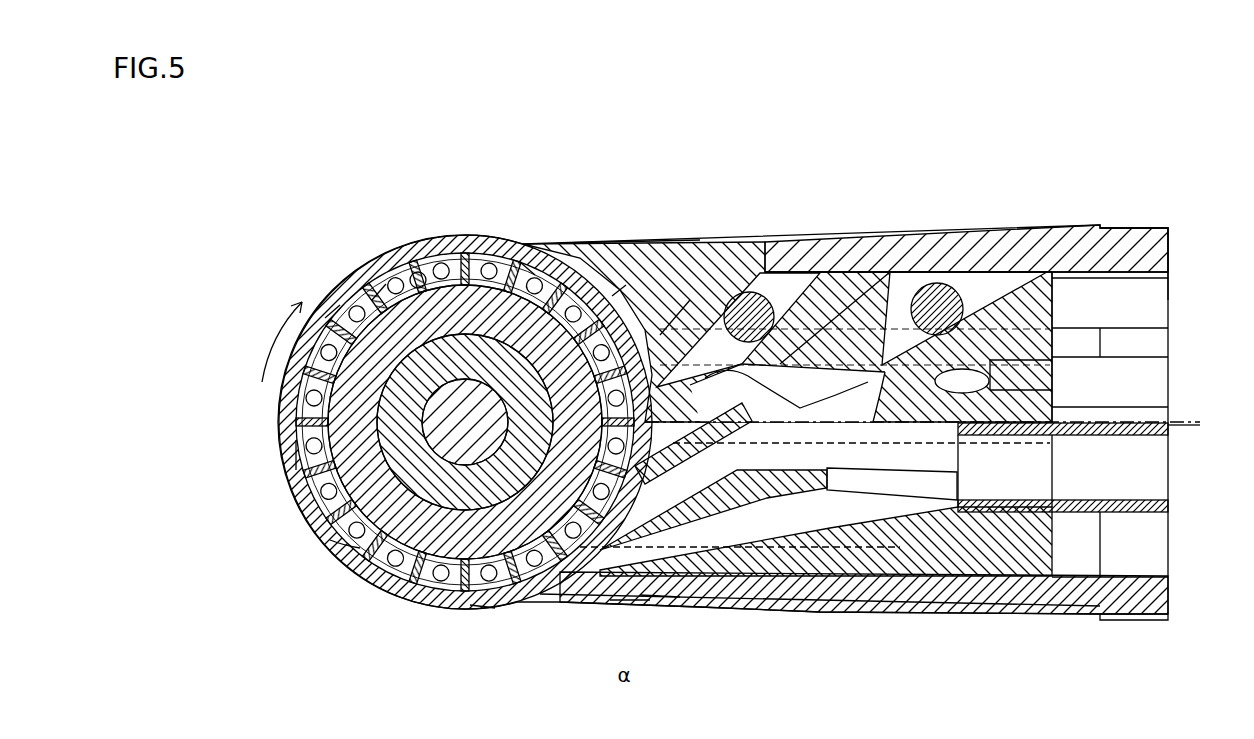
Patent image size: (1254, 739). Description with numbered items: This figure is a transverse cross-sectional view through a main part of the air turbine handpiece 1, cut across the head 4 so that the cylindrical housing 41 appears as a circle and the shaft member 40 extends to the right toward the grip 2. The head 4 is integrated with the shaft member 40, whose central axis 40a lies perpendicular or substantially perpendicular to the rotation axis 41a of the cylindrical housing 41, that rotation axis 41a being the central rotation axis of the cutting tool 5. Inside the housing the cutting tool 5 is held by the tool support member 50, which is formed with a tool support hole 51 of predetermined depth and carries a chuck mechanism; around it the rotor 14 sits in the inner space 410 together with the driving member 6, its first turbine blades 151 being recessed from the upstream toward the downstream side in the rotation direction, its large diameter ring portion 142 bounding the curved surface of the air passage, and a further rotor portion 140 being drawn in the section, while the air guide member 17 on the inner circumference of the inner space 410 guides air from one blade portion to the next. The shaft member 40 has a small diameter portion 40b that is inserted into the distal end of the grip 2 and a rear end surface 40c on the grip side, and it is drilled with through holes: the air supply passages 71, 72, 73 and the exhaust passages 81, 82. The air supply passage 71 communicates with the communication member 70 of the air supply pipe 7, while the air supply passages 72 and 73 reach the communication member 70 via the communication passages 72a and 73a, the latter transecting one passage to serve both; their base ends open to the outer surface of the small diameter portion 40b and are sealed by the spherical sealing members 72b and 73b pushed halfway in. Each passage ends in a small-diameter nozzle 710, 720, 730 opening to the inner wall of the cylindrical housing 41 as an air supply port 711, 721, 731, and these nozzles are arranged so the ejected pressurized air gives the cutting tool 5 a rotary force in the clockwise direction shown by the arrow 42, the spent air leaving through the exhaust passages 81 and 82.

The air turbine handpiece 1 is at (1066, 210).
The grip 2 is at (1135, 228).
The head 4 is at (523, 610).
The cutting tool 5 is at (440, 592).
The driving member 6 is at (590, 250).
The air supply pipe 7 is at (1130, 512).
The rotor 14 is at (357, 575).
The air guide member 17 is at (328, 318).
The shaft member 40 is at (836, 614).
The central axis 40a is at (1182, 428).
The small diameter portion 40b is at (962, 616).
The rear end surface 40c is at (1066, 620).
The cylindrical housing 41 is at (320, 500).
The rotation axis 41a is at (416, 272).
The arrow (rotation direction) 42 is at (265, 385).
The tool support member 50 is at (393, 588).
The tool support hole 51 is at (479, 340).
The communication member 70 is at (905, 614).
The air supply passage 71 is at (706, 612).
The air supply passage 72 is at (862, 345).
The communication passage 72a is at (890, 255).
The spherical sealing member 72b is at (948, 288).
The air supply passage 73 is at (700, 262).
The communication passage 73a is at (742, 293).
The spherical sealing member 73b is at (745, 384).
The exhaust passage 81 is at (791, 613).
The exhaust passage 82 is at (850, 255).
The groove 140 is at (525, 265).
The large diameter ring portion 142 is at (372, 300).
The first turbine blade 151 is at (286, 442).
The inner space 410 is at (335, 552).
The nozzle 710 is at (615, 612).
The air supply port 711 is at (504, 603).
The nozzle 720 is at (646, 612).
The air supply port 721 is at (480, 610).
The nozzle 730 is at (665, 330).
The air supply port 731 is at (618, 292).